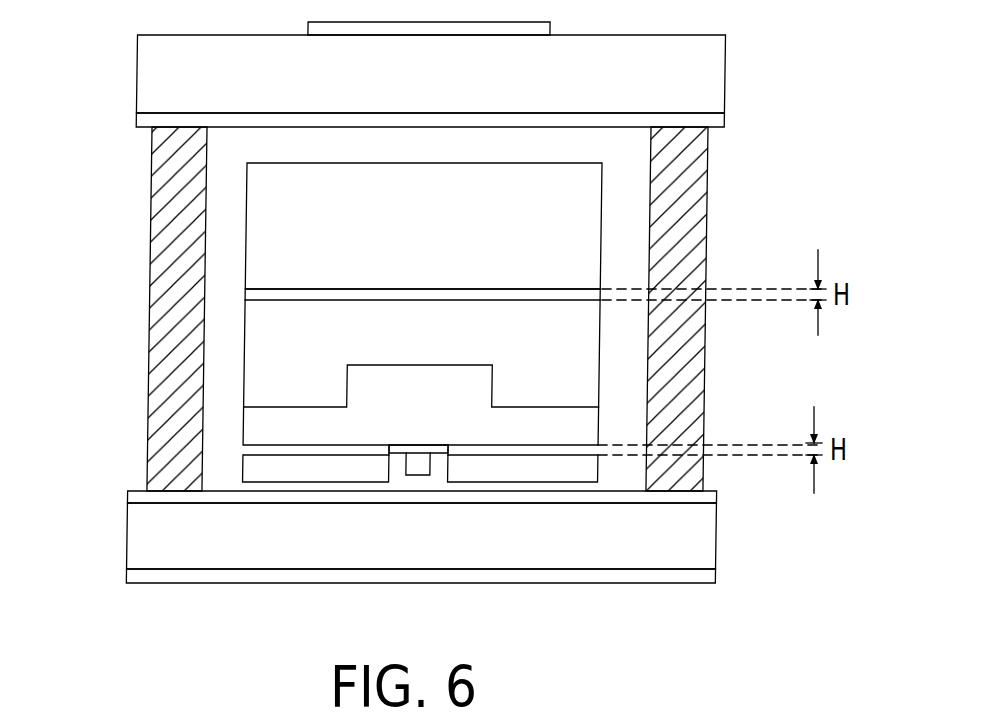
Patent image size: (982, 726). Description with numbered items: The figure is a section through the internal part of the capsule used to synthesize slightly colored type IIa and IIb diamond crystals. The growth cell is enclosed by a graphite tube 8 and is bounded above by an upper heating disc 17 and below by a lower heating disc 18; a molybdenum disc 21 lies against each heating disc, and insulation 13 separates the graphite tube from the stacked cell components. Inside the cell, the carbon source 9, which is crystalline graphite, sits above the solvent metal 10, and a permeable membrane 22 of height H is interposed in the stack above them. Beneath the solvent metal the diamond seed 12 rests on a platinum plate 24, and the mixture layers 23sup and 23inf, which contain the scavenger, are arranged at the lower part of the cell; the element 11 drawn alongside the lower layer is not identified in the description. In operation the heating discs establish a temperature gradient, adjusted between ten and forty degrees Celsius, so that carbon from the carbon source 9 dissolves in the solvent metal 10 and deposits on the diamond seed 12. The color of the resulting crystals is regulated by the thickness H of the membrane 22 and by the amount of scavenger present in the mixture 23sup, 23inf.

The upper heating disc 17 is at (693, 63).
The molybdenum disc 21 is at (705, 120).
The graphite tube 8 is at (682, 175).
The insulation 13 is at (220, 340).
The mixture (lower surface) 23sup is at (300, 225).
The permeable membrane 22 is at (538, 296).
The carbon source 9 is at (567, 352).
The solvent metal 10 is at (587, 425).
The mixture (lower surface) 23inf is at (297, 472).
The support plate 11 is at (525, 450).
The platinum plate 24 is at (402, 450).
The diamond seed 12 is at (415, 466).
The lower heating disc 18 is at (678, 537).